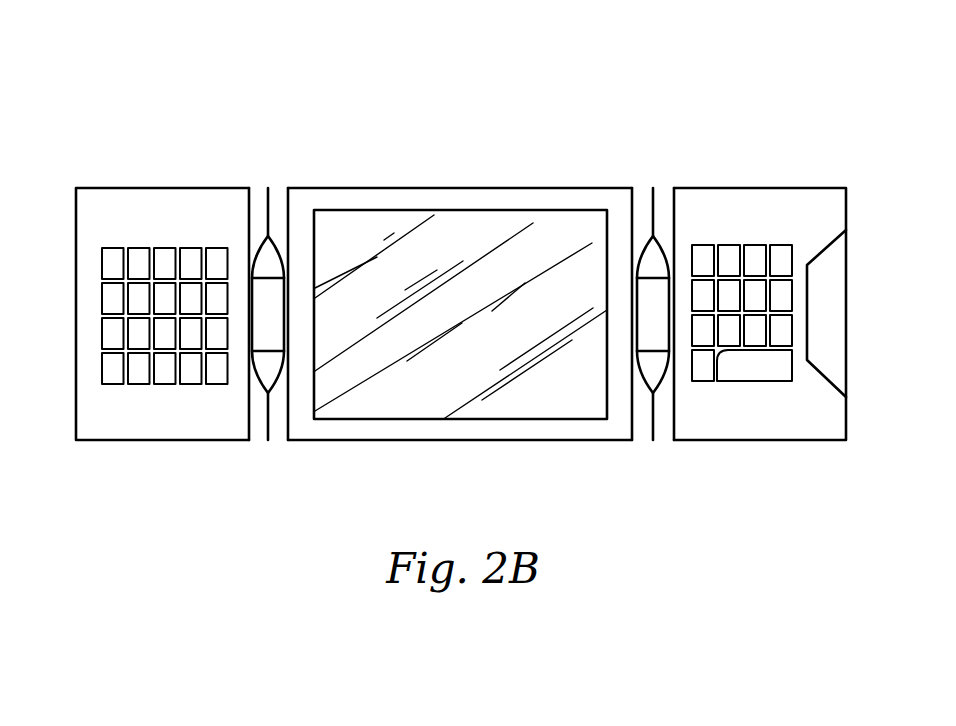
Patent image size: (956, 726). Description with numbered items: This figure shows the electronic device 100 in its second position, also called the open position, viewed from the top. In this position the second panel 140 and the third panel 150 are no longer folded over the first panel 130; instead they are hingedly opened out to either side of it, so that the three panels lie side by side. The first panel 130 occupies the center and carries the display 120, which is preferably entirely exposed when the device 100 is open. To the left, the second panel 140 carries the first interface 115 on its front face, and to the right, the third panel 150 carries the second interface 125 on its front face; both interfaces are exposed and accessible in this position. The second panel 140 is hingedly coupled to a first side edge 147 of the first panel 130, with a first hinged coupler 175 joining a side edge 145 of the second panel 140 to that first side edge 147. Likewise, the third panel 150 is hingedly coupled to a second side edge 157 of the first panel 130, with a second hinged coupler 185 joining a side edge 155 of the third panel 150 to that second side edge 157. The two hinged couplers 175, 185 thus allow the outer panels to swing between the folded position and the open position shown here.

The device 100 is at (158, 72).
The first interface 115 is at (167, 367).
The display 120 is at (450, 242).
The second interface 125 is at (765, 360).
The first panel 130 is at (388, 428).
The second panel 140 is at (147, 206).
The side edge of the second panel 145 is at (268, 408).
The first side edge 147 is at (268, 423).
The third panel 150 is at (752, 226).
The side edge of the third panel 155 is at (652, 425).
The second side edge 157 is at (653, 395).
The first hinged coupler 175 is at (270, 300).
The second hinged coupler 185 is at (657, 300).